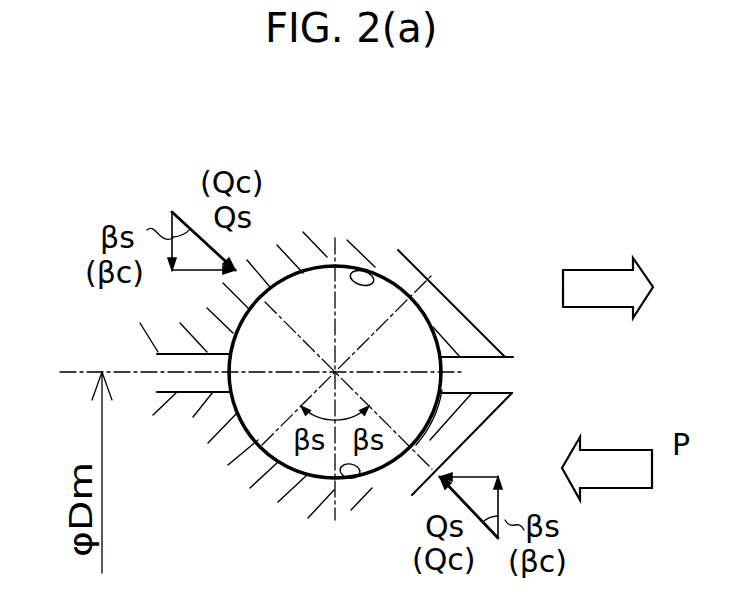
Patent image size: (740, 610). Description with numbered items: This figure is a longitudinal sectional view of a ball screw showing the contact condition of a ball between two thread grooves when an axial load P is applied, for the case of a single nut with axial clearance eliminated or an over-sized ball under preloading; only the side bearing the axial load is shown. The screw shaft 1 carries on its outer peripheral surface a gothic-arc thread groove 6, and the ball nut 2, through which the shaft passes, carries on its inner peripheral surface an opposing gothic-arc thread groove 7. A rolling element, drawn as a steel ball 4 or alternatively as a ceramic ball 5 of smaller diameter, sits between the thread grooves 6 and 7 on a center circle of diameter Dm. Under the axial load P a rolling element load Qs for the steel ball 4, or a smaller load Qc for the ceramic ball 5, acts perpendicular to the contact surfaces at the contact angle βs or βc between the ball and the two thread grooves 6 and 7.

The screw shaft 1 is at (272, 488).
The ball nut 2 is at (460, 287).
The steel ball 4 is at (335, 321).
The ceramic ball 5 is at (305, 268).
The thread groove 6 is at (362, 482).
The thread groove 7 is at (372, 270).